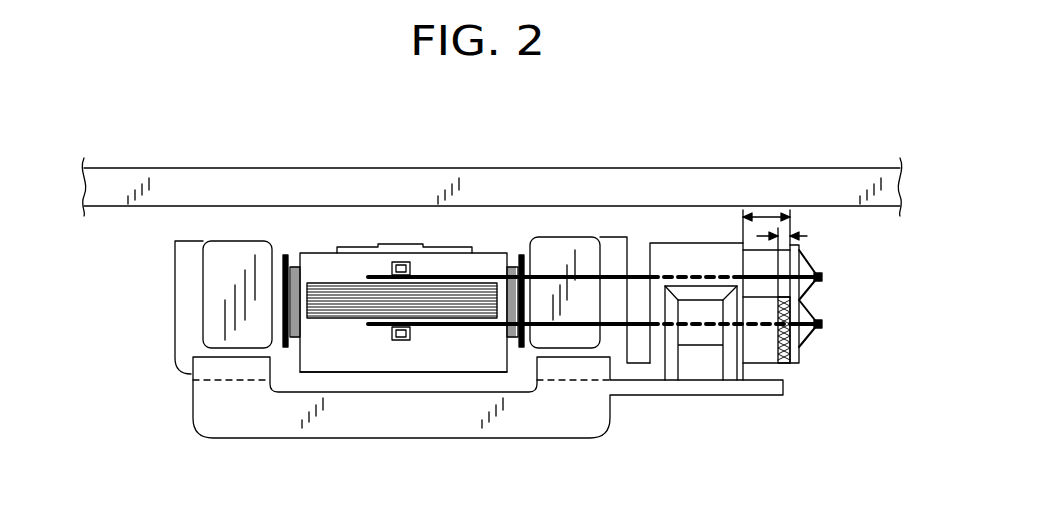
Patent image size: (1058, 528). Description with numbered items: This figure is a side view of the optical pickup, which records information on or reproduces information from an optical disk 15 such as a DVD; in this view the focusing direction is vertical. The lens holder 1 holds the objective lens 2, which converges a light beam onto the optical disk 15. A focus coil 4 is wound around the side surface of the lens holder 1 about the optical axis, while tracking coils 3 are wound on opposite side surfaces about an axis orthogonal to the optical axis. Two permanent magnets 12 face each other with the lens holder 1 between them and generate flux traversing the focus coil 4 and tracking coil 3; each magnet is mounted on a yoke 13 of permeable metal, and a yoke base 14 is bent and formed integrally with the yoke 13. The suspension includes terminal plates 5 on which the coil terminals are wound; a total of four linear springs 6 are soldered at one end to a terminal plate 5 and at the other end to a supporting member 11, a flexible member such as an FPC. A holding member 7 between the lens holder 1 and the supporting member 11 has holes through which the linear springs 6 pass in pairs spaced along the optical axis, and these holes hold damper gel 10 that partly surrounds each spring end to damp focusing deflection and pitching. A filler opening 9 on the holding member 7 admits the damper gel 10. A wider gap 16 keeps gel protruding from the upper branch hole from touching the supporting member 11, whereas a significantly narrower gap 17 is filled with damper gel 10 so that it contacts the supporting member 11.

The lens holder 1 is at (468, 360).
The objective lens 2 is at (392, 245).
The tracking coil 3 is at (288, 300).
The focus coil 4 is at (345, 308).
The terminal plate 5 is at (402, 262).
The linear spring 6 is at (590, 275).
The holding member 7 is at (697, 243).
The filler opening 9 is at (720, 375).
The damper gel 10 is at (785, 365).
The supporting member 11 is at (803, 252).
The permanent magnet 12 is at (220, 313).
The yoke 13 is at (185, 270).
The yoke base 14 is at (213, 420).
The optical disk 15 is at (186, 182).
The gap 16 is at (768, 215).
The gap 17 is at (793, 225).